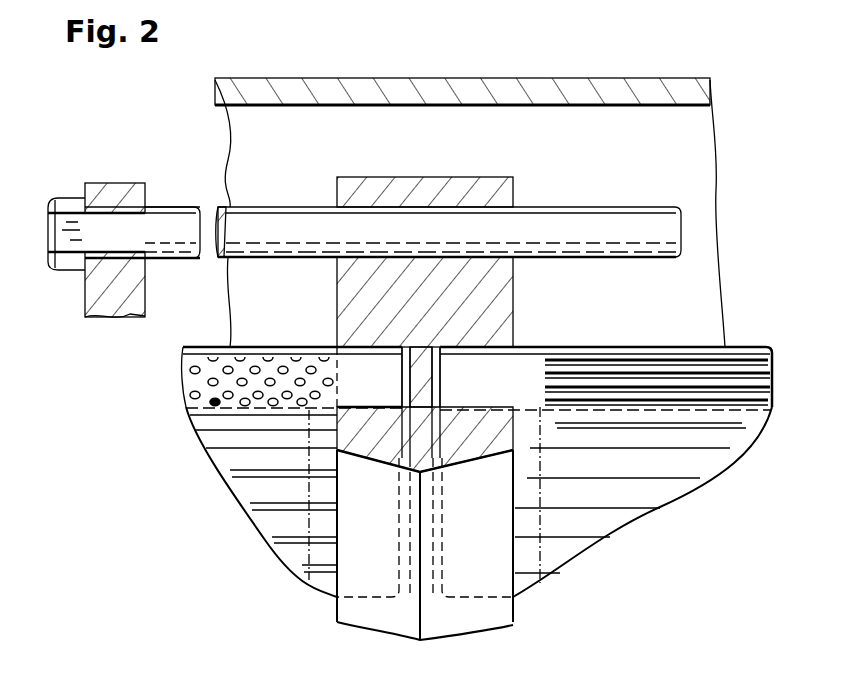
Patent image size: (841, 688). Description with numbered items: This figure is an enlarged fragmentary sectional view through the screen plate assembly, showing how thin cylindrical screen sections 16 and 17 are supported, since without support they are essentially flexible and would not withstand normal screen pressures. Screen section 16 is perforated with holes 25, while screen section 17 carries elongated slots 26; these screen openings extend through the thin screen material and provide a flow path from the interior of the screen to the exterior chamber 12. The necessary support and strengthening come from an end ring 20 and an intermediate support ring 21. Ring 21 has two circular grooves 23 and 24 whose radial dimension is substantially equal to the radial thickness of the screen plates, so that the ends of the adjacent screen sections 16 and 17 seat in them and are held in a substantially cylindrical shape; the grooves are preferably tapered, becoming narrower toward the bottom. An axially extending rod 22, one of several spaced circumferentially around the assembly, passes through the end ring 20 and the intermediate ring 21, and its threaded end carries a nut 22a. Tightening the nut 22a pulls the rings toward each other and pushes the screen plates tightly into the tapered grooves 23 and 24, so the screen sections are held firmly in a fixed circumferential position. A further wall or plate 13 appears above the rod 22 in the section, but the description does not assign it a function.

The exterior chamber 12 is at (697, 155).
The cover plate 13 is at (555, 82).
The cylindrical screen section 16 is at (270, 382).
The cylindrical screen section 17 is at (608, 349).
The end ring 20 is at (133, 190).
The intermediate support ring 21 is at (472, 178).
The axially extending rod 22 is at (616, 222).
The nut 22a is at (68, 207).
The groove 23 is at (320, 348).
The groove 24 is at (516, 348).
The holes 25 is at (257, 372).
The slots 26 is at (752, 386).